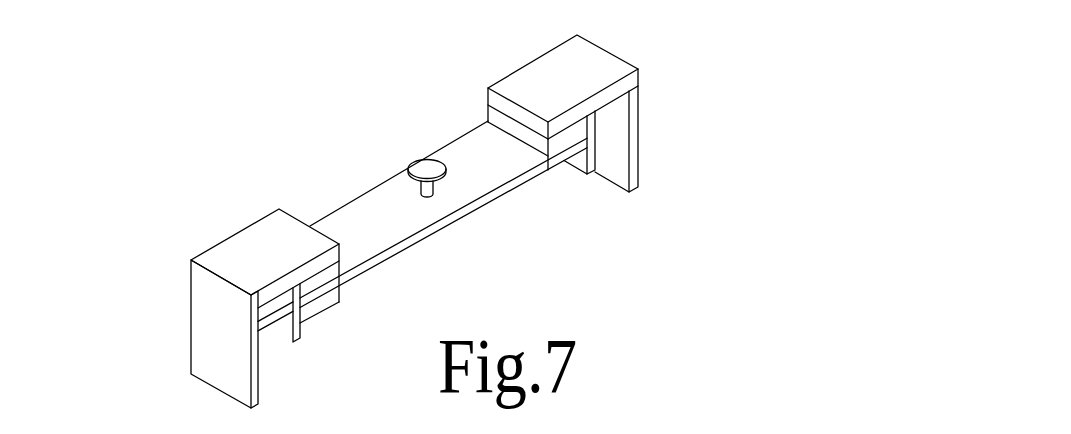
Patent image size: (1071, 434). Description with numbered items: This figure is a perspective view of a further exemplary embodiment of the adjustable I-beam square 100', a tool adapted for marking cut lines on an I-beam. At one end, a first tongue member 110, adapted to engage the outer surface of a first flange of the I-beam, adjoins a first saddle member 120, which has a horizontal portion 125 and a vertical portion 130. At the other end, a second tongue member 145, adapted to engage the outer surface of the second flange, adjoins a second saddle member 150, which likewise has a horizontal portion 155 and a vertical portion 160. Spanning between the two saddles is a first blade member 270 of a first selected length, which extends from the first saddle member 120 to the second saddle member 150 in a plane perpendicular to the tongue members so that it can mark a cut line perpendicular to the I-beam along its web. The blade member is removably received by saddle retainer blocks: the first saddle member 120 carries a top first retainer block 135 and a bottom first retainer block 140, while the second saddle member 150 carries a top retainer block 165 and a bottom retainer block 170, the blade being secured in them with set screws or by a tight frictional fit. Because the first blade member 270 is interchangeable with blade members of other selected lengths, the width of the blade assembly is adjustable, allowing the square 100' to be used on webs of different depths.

The adjustable I-beam square 100' is at (397, 216).
The first tongue member 110 is at (213, 328).
The first saddle member 120 is at (250, 197).
The horizontal portion 125 is at (283, 230).
The vertical portion 130 is at (294, 342).
The top first retainer block 135 is at (345, 263).
The bottom first retainer block 140 is at (328, 308).
The second tongue member 145 is at (633, 148).
The second saddle member 150 is at (492, 59).
The horizontal portion 155 is at (597, 70).
The vertical portion 160 is at (592, 171).
The top retainer block 165 is at (498, 121).
The bottom retainer block 170 is at (559, 174).
The first blade member 270 is at (454, 226).